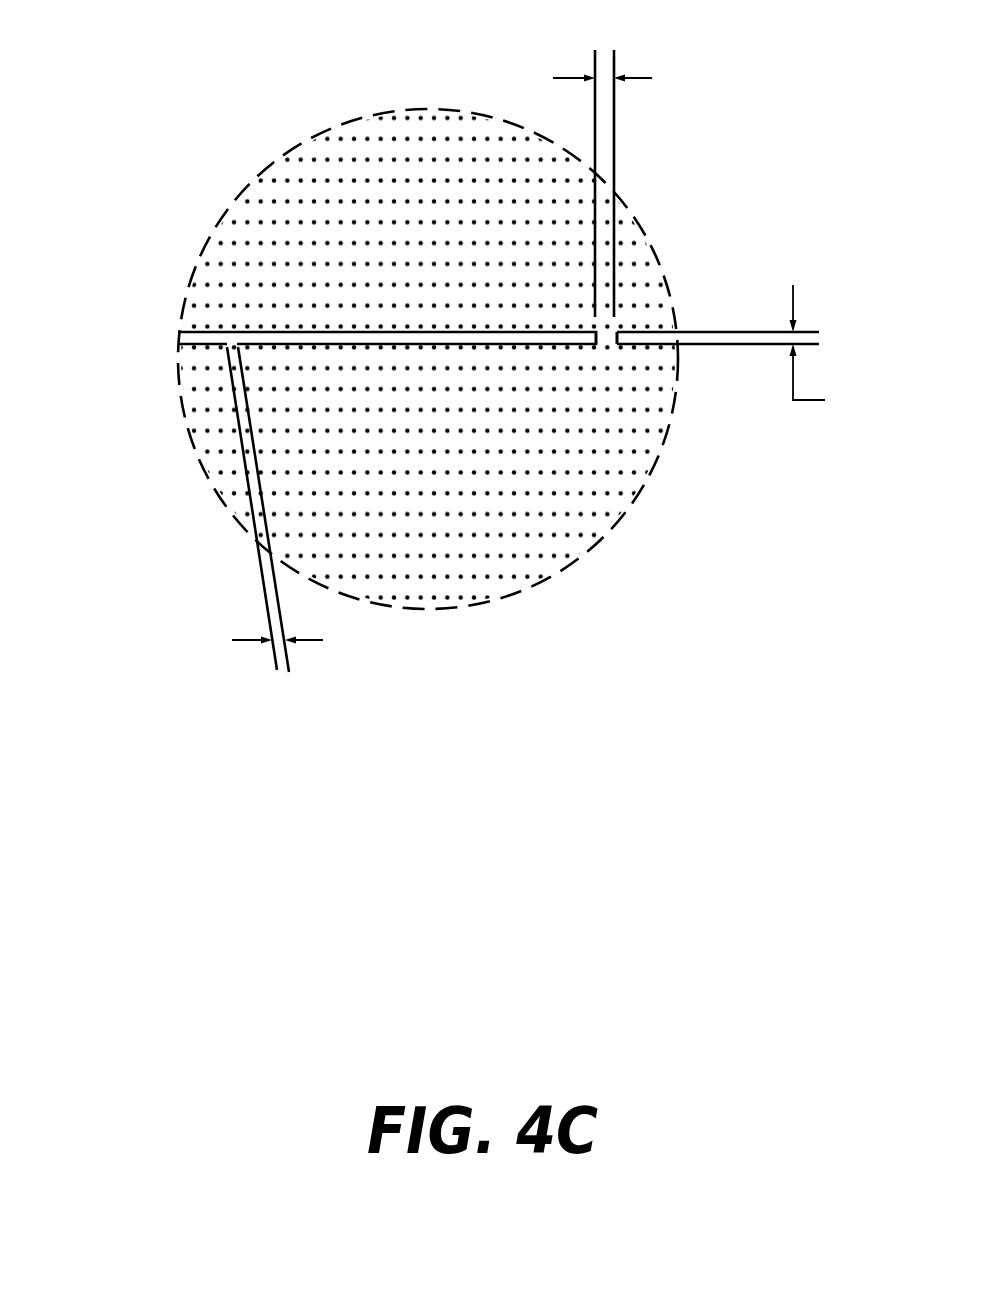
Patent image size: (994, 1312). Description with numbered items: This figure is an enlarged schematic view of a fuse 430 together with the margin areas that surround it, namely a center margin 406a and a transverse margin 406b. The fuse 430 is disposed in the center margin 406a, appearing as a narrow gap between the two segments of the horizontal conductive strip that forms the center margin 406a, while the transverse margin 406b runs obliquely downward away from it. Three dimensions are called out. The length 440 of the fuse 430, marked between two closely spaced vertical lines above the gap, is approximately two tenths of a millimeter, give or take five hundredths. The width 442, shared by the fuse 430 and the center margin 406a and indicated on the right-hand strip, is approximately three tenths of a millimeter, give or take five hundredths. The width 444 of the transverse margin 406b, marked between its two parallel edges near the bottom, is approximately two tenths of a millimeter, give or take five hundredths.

The center margin 406a is at (193, 332).
The transverse margin 406b is at (248, 477).
The fuse 430 is at (606, 348).
The length of fuse 440 is at (635, 183).
The width of fuse and center margin 442 is at (835, 351).
The width of transverse margin 444 is at (306, 640).